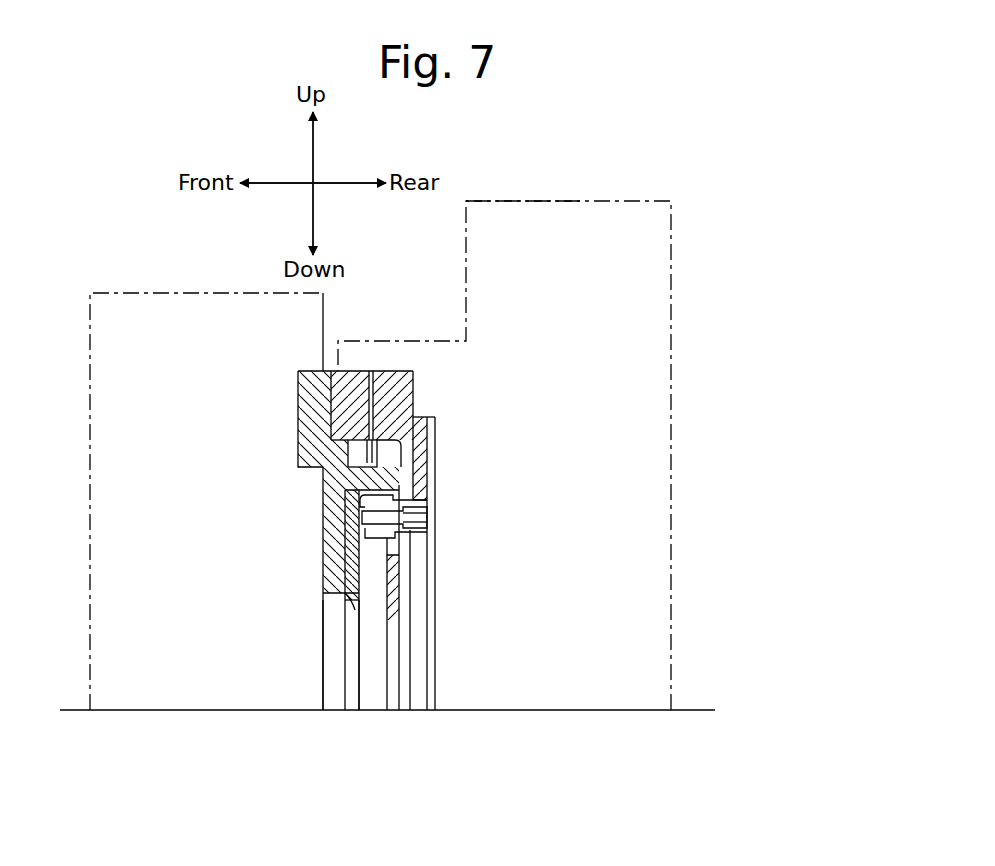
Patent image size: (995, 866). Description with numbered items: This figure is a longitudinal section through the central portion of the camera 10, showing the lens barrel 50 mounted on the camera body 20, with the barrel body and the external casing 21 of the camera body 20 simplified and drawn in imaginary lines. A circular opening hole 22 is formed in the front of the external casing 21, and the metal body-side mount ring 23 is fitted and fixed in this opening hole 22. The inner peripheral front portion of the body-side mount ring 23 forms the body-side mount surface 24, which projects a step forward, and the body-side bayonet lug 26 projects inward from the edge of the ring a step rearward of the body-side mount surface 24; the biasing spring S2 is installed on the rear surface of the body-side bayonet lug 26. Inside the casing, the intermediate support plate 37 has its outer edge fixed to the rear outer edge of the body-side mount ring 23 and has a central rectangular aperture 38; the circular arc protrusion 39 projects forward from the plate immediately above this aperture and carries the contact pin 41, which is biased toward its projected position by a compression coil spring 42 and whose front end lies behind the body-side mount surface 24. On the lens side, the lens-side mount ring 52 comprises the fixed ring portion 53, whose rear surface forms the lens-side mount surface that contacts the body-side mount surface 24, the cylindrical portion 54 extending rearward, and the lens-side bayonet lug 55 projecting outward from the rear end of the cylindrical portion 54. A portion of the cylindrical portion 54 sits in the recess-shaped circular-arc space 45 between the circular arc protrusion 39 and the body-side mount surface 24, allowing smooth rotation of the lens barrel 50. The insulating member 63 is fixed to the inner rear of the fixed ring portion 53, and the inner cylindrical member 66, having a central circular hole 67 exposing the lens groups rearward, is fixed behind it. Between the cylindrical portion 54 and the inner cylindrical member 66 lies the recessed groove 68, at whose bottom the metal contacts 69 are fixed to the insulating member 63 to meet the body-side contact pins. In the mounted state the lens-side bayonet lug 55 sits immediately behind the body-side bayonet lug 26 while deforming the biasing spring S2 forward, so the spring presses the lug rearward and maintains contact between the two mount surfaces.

The camera 10 is at (142, 219).
The camera body 20 is at (707, 258).
The external casing 21 is at (510, 200).
The opening hole 22 is at (348, 383).
The body-side mount ring 23 is at (330, 385).
The body-side mount surface 24 is at (343, 381).
The body-side bayonet lug 26 is at (323, 453).
The intermediate support plate 37 is at (419, 463).
The central rectangular aperture 38 is at (400, 538).
The circular arc protrusion 39 is at (397, 494).
The contact pin 41 is at (345, 533).
The compression coil spring 42 is at (428, 520).
The recess-shaped circular-arc space 45 is at (408, 478).
The lens barrel 50 is at (104, 272).
The lens-side mount ring 52 is at (330, 677).
The fixed ring portion 53 is at (385, 378).
The cylindrical portion 54 is at (365, 513).
The lens-side bayonet lug 55 is at (419, 448).
The insulating member 63 is at (345, 602).
The inner cylindrical member 66 is at (400, 605).
The circular hole 67 is at (392, 612).
The recessed groove 68 is at (362, 560).
The contact 69 is at (403, 540).
The biasing spring S2 is at (410, 424).